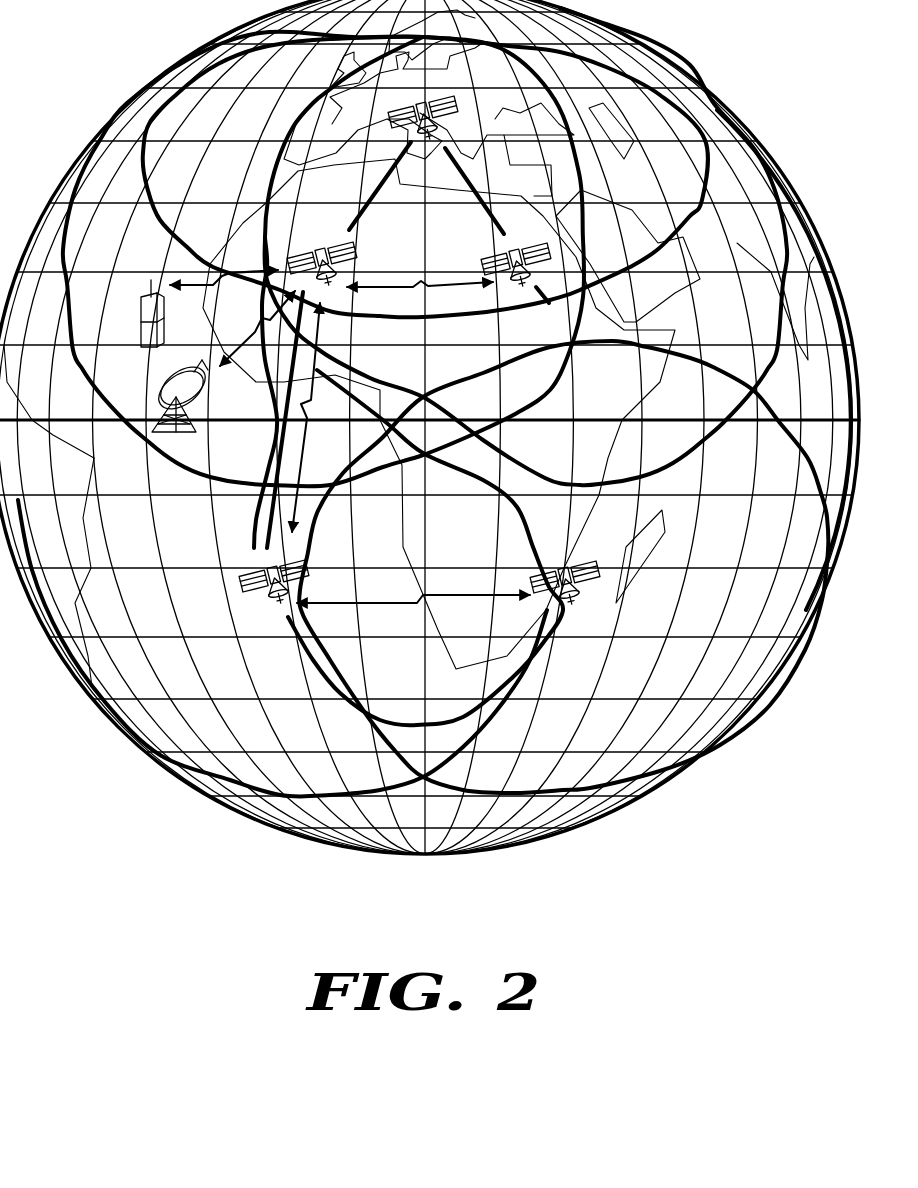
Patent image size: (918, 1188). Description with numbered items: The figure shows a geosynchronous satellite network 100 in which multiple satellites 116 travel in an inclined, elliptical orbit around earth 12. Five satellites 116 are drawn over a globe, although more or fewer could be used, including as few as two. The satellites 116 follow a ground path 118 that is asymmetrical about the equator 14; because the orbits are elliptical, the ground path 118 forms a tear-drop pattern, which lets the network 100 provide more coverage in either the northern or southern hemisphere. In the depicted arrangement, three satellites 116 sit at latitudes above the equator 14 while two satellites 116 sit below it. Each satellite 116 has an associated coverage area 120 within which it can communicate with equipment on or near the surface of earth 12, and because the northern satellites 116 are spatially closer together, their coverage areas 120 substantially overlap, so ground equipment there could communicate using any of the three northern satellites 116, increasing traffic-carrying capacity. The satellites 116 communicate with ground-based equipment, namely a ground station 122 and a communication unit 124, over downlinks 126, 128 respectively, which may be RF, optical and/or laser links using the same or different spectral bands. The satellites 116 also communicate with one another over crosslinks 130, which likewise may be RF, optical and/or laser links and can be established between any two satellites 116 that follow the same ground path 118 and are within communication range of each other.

The earth 12 is at (686, 770).
The equator 14 is at (652, 418).
The geosynchronous satellite network 100 is at (271, 968).
The satellite 116 is at (446, 112).
The ground path 118 is at (592, 502).
The coverage area 120 is at (581, 171).
The ground station 122 is at (192, 438).
The communication unit 124 is at (133, 295).
The downlink 126 is at (242, 352).
The downlink 128 is at (204, 289).
The crosslink 130 is at (458, 283).